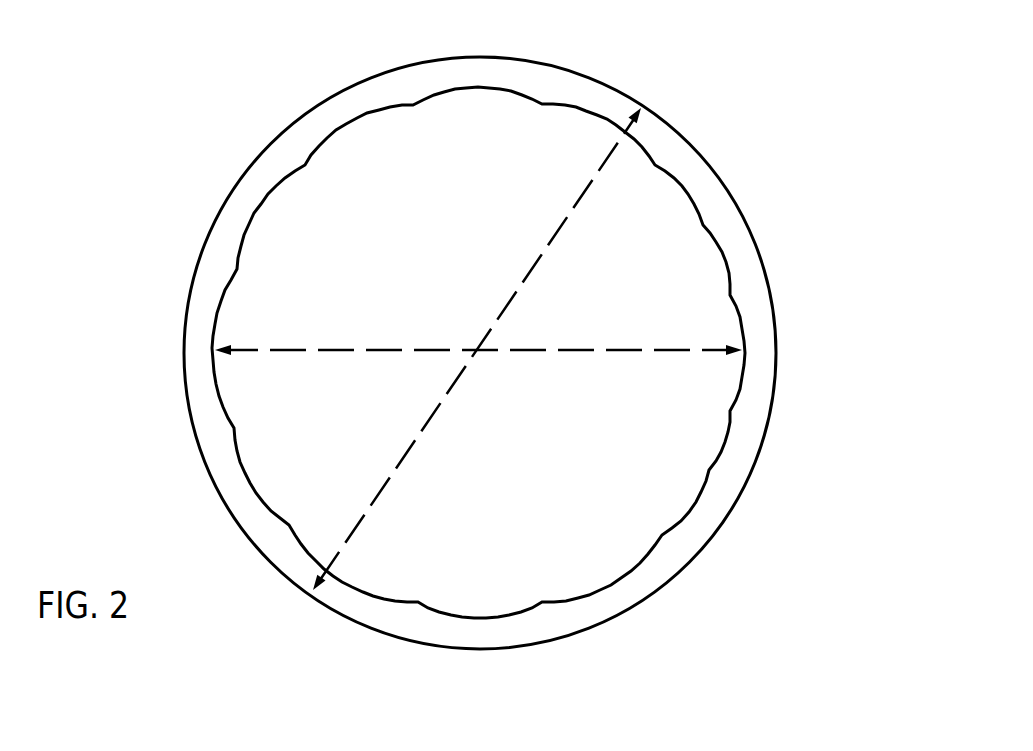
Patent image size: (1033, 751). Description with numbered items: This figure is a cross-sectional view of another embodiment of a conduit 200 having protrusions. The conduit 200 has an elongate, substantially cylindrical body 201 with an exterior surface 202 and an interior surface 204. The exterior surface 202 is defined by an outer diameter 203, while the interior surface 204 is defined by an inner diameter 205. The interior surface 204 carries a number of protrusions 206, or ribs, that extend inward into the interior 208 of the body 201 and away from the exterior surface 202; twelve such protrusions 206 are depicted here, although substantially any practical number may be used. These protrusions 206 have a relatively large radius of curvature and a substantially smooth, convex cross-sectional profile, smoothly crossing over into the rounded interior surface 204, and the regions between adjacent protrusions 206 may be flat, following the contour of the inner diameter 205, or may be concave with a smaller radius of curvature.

The conduit 200 is at (272, 53).
The body 201 is at (672, 150).
The exterior surface 202 is at (612, 71).
The outer diameter 203 is at (434, 403).
The interior surface 204 is at (696, 228).
The inner diameter 205 is at (303, 347).
The protrusions 206 is at (540, 105).
The interior 208 is at (670, 438).